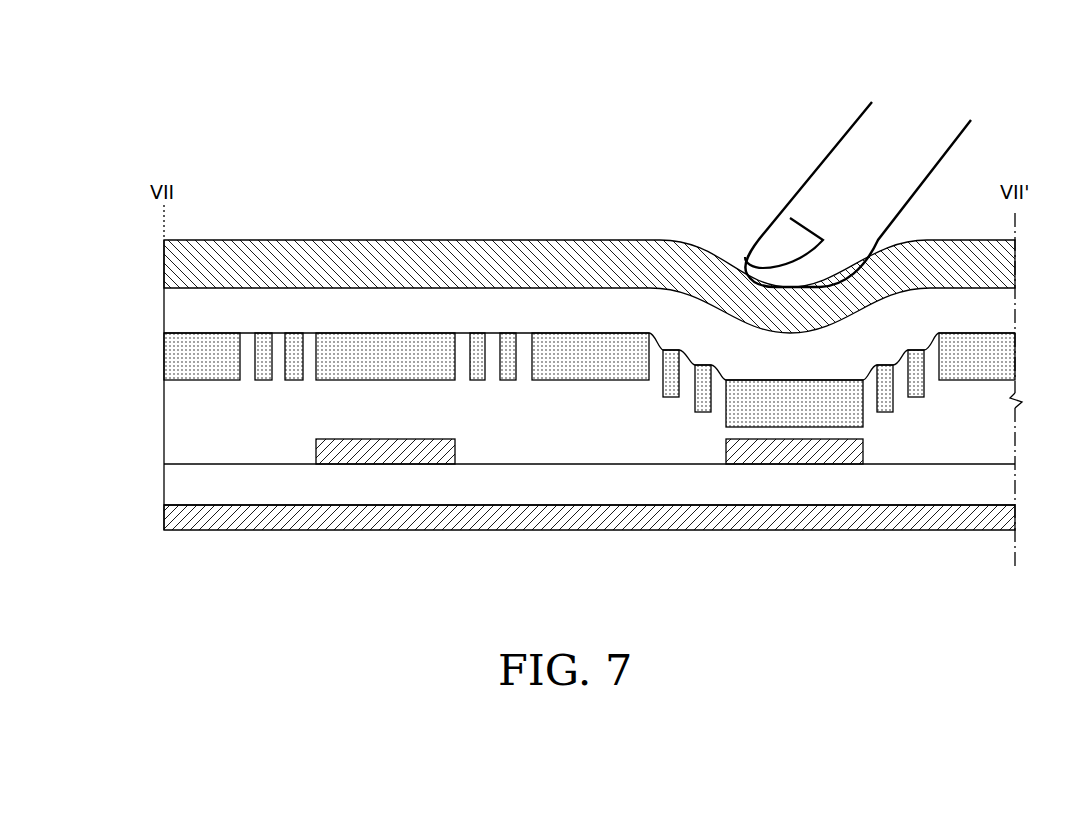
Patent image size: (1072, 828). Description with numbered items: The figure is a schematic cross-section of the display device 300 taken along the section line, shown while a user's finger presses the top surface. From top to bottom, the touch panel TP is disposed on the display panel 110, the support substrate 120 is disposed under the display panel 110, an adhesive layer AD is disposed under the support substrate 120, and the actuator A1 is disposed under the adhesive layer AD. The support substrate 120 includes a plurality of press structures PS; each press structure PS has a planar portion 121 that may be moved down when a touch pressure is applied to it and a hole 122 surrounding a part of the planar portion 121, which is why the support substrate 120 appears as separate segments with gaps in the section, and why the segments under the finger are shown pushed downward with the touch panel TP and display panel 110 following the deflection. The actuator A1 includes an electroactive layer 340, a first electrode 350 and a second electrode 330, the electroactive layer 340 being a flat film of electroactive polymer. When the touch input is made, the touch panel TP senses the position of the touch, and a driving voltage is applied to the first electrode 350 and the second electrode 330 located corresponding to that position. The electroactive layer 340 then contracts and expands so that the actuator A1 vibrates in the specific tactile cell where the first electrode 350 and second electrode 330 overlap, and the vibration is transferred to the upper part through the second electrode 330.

The display device 300 is at (1012, 77).
The touch panel TP is at (183, 262).
The display panel 110 is at (185, 310).
The support substrate 120 is at (185, 357).
The press structure PS is at (392, 178).
The planar portion 121 is at (378, 355).
The hole 122 is at (316, 357).
The adhesive layer AD is at (185, 409).
The second electrode 330 is at (330, 450).
The electroactive layer 340 is at (185, 486).
The first electrode 350 is at (187, 520).
The actuator A1 is at (78, 447).